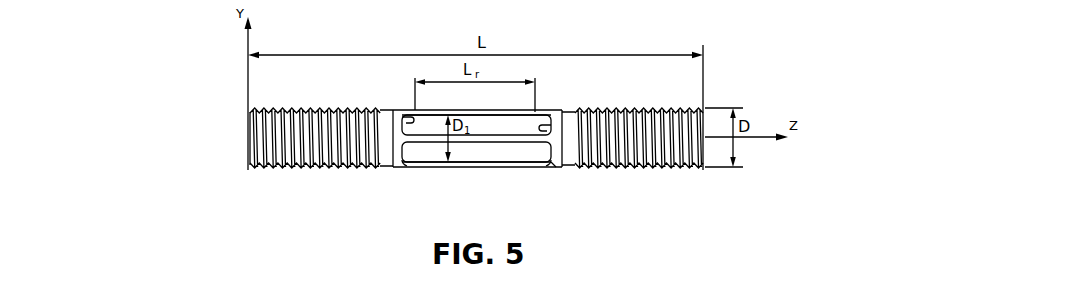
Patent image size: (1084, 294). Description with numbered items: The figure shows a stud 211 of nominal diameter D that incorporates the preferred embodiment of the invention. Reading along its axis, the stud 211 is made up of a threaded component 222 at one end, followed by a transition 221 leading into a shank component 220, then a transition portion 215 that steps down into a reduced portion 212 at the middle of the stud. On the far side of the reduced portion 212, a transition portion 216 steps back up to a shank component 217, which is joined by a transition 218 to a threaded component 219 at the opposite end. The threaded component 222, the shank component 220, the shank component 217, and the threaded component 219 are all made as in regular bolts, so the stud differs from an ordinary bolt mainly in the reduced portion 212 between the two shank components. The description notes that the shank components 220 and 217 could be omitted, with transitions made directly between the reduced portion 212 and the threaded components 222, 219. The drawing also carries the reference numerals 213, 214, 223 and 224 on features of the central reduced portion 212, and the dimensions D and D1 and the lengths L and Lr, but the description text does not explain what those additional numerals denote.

The stud 211 is at (250, 152).
The reduced portion 212 is at (472, 95).
The web 213 is at (467, 152).
The flat surfaces 214 is at (495, 106).
The transition portion 215 is at (407, 165).
The transition portion 216 is at (546, 165).
The shank component 217 is at (555, 168).
The transition 218 is at (567, 166).
The threaded component 219 is at (637, 167).
The shank component 220 is at (400, 168).
The transition 221 is at (387, 168).
The threaded component 222 is at (313, 168).
The strain gauge 223 is at (400, 113).
The strain gauge 224 is at (551, 110).